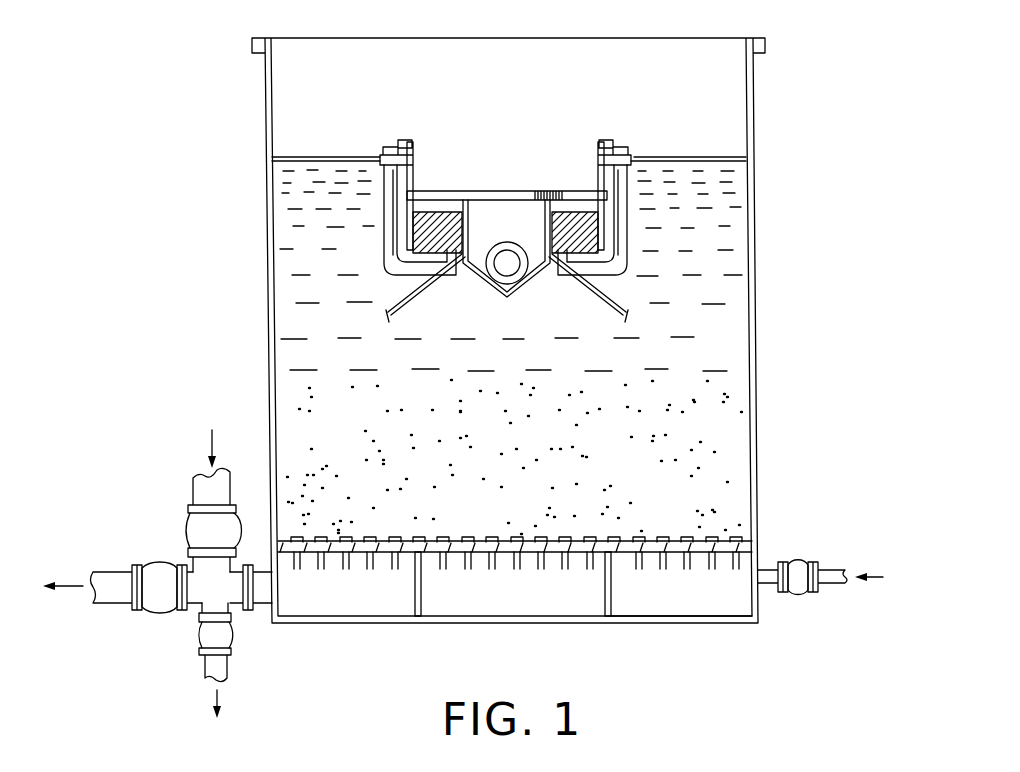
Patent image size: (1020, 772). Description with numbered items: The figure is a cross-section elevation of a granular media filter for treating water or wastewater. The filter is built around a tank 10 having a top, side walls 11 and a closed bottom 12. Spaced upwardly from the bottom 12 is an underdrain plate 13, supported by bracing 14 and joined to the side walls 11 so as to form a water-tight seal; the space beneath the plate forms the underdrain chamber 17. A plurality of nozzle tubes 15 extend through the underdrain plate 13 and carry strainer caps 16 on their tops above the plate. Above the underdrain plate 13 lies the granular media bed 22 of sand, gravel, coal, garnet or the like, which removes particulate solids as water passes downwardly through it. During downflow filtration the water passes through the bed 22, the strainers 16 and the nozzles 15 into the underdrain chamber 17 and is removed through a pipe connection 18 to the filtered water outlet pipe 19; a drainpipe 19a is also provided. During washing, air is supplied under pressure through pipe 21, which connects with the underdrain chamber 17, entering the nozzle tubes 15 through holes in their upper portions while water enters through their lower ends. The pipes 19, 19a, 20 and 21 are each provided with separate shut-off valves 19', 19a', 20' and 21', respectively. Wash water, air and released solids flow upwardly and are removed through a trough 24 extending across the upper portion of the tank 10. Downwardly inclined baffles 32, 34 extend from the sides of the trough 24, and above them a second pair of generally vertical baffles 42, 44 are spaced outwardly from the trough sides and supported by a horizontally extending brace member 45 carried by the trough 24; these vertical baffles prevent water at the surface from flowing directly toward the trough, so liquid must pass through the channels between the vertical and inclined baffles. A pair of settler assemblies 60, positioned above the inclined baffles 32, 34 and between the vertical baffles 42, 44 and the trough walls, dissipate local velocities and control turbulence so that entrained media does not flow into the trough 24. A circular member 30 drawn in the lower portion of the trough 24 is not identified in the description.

The tank 10 is at (204, 206).
The side walls 11 is at (268, 341).
The closed bottom 12 is at (515, 590).
The underdrain plate 13 is at (515, 552).
The bracing 14 is at (421, 592).
The nozzle tubes 15 is at (345, 570).
The strainer caps 16 is at (388, 537).
The underdrain chamber 17 is at (592, 610).
The pipe connection 18 is at (262, 604).
The filtered water outlet pipe 19 is at (122, 567).
The shut-off valve 19' is at (131, 610).
The drainpipe 19a is at (180, 660).
The shut-off valve 19a' is at (175, 646).
The pipe 20 is at (176, 501).
The shut-off valve 20' is at (180, 530).
The pipe 21 is at (820, 548).
The shut-off valve 21' is at (824, 605).
The granular media bed 22 is at (305, 400).
The trough 24 is at (480, 218).
The roller 30 is at (522, 248).
The downwardly inclined baffle 32 is at (425, 292).
The downwardly inclined baffle 34 is at (592, 290).
The vertical baffle 42 is at (412, 153).
The vertical baffle 44 is at (600, 168).
The brace member 45 is at (562, 190).
The settler assembly 60 is at (413, 242).